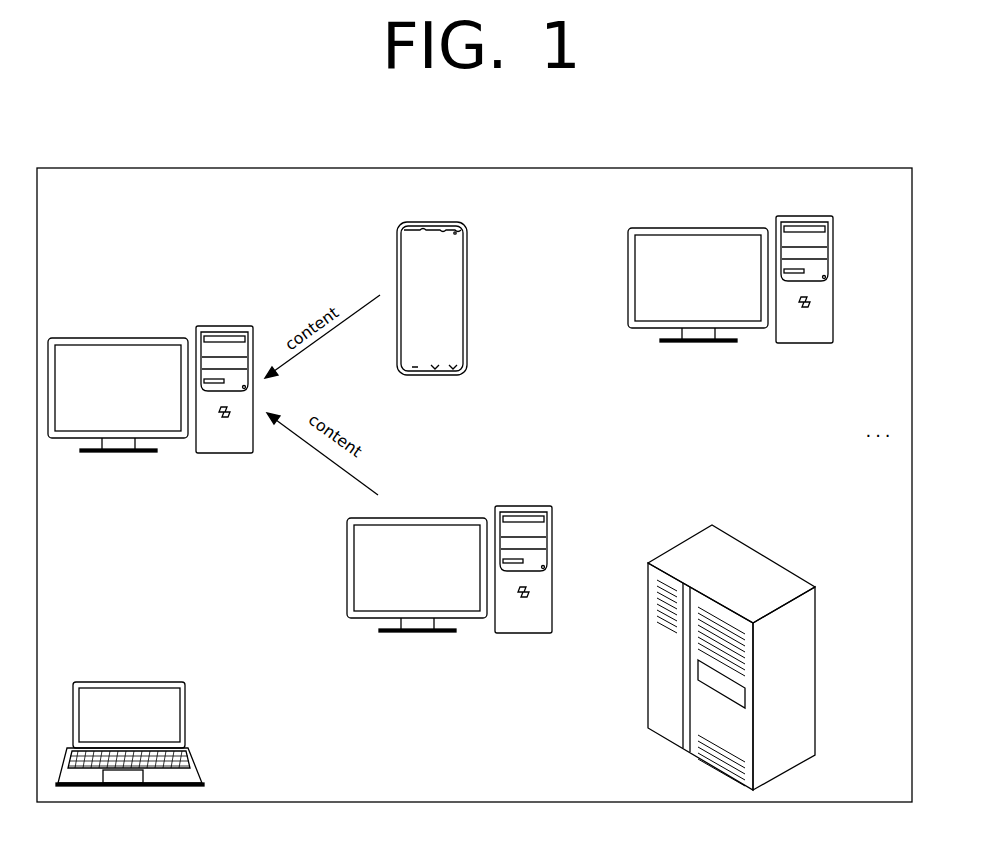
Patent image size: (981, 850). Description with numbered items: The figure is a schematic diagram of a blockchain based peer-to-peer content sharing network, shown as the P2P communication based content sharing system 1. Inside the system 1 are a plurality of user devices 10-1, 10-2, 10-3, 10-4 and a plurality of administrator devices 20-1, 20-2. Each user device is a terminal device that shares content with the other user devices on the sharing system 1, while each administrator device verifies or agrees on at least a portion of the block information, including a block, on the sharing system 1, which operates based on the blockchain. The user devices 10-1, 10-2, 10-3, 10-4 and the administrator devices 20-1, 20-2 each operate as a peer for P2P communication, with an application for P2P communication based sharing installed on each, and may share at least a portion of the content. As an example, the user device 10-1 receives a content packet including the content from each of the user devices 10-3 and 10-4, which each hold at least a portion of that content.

The P2P communication based content sharing system 1 is at (848, 168).
The user device 10-1 is at (115, 338).
The user device 10-2 is at (147, 682).
The user device 10-3 is at (468, 243).
The user device 10-4 is at (407, 518).
The administrator device 20-1 is at (688, 228).
The administrator device 20-2 is at (728, 530).